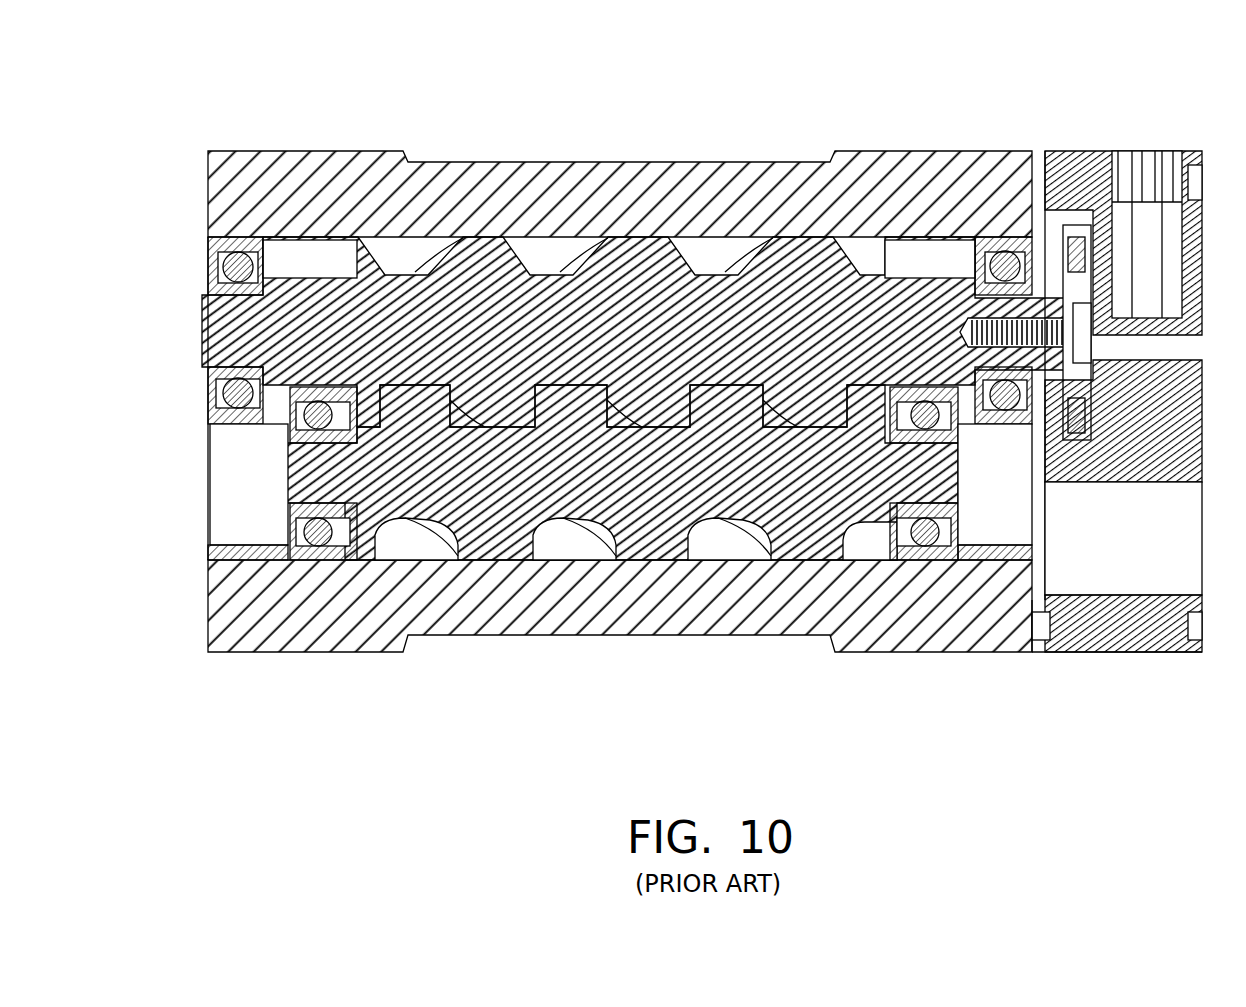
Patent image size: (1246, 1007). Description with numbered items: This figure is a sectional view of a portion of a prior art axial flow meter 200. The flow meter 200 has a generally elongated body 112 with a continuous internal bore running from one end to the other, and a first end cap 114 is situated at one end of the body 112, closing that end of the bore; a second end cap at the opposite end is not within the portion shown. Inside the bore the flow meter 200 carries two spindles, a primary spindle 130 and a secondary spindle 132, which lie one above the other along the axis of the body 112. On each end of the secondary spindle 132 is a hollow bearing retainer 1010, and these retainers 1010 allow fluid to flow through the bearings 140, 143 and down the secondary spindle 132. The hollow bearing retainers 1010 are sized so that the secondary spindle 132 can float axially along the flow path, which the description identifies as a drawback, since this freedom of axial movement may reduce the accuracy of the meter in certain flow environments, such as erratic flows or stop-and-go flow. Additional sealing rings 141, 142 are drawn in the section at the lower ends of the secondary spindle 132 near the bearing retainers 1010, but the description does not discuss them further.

The flow meter 200 is at (660, 150).
The body 112 is at (520, 160).
The first end cap 114 is at (1108, 640).
The primary spindle 130 is at (795, 255).
The secondary spindle 132 is at (810, 520).
The bearing 140 is at (222, 266).
The seal ring 141 is at (325, 542).
The seal ring 142 is at (930, 542).
The bearing 143 is at (995, 252).
The hollow bearing retainer 1010 is at (245, 520).